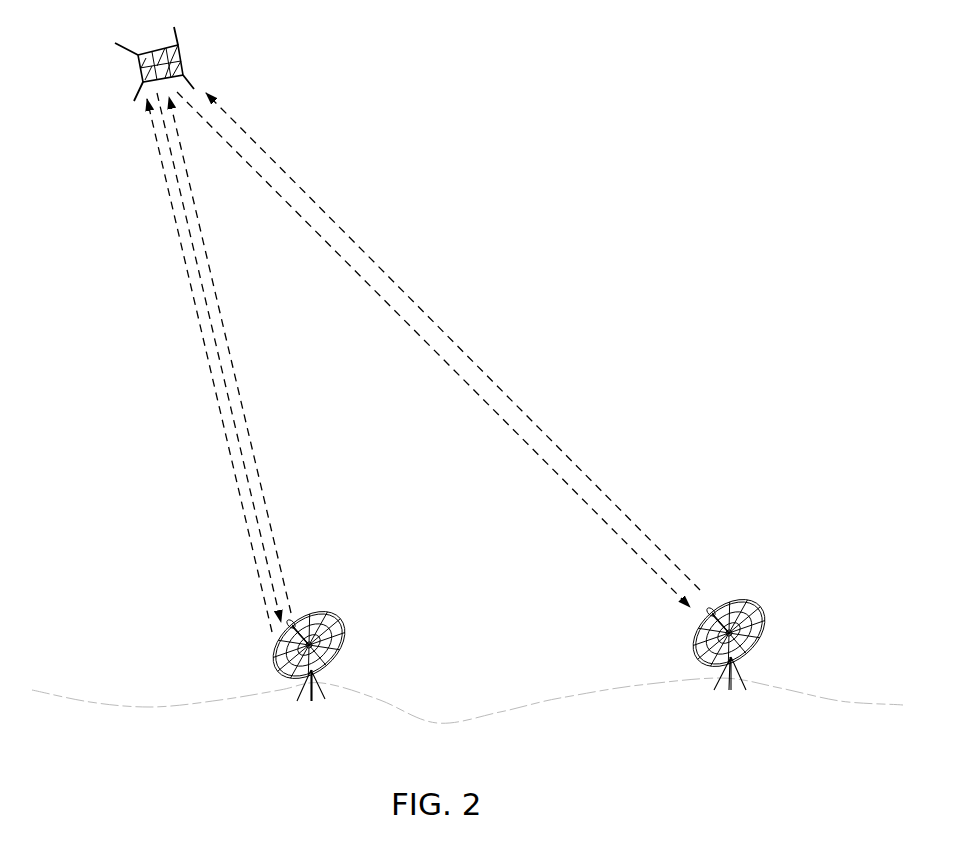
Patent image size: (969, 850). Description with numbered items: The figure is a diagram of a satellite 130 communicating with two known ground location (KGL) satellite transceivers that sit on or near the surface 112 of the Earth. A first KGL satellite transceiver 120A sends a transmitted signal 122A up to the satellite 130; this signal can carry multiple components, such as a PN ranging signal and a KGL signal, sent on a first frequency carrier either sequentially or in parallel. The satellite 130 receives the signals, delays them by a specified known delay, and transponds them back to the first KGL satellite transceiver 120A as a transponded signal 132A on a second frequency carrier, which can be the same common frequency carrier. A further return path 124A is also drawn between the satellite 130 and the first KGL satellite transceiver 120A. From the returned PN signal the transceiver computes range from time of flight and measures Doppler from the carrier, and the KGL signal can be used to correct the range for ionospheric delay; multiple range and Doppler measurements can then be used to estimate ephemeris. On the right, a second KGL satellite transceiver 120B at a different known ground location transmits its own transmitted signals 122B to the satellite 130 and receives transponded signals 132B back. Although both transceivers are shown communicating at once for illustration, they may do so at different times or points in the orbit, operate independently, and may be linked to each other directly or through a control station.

The surface of the Earth 112 is at (808, 701).
The satellite 130 is at (149, 105).
The KGL satellite transceiver 120A is at (342, 629).
The second KGL satellite transceiver 120B is at (692, 637).
The transmitted signal 122A is at (243, 401).
The transmitted signals 122B is at (447, 334).
The downlink signal 124A is at (232, 469).
The transponded signal 132A is at (214, 346).
The transponded signals 132B is at (402, 319).